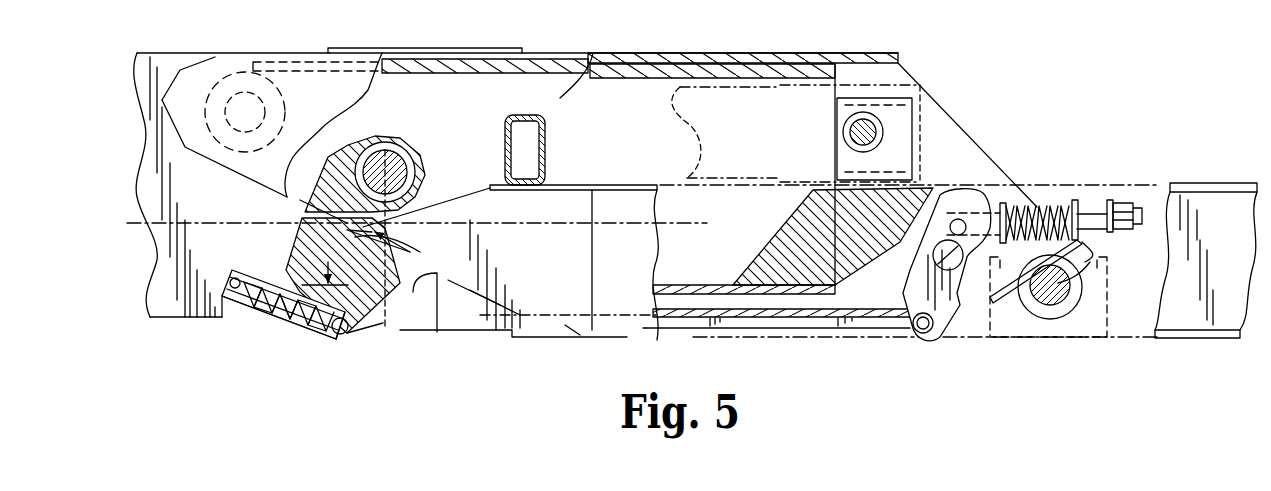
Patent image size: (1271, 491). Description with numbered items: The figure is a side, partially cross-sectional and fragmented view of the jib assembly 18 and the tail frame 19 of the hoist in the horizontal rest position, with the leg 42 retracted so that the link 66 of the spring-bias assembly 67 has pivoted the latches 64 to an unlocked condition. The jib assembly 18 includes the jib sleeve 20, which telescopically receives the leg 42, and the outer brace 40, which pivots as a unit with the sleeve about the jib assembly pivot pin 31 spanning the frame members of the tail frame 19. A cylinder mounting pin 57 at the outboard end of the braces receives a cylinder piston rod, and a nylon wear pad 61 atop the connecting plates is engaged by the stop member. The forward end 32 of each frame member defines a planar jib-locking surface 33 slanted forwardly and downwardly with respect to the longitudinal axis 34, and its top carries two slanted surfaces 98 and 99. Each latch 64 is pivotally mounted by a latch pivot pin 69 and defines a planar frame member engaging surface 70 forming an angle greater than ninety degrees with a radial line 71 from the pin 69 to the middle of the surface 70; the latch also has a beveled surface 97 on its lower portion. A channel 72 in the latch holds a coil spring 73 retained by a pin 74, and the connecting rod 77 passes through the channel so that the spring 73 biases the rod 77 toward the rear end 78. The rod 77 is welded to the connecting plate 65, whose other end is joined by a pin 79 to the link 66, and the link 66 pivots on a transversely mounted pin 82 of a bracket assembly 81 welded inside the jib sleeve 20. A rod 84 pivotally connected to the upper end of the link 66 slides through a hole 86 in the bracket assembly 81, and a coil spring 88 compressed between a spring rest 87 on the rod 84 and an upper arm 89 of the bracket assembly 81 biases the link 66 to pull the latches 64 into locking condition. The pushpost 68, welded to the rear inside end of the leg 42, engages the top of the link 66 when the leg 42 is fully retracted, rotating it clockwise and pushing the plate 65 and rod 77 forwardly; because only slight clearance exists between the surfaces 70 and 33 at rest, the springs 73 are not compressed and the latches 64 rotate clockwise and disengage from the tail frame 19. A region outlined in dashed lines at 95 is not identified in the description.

The jib assembly 18 is at (553, 48).
The tail frame 19 is at (630, 342).
The jib sleeve 20 is at (180, 53).
The jib assembly pivot pin 31 is at (1055, 320).
The forward end 32 is at (476, 325).
The jib-locking surface 33 is at (415, 290).
The longitudinal axis 34 is at (688, 232).
The outer brace 40 is at (300, 85).
The leg 42 is at (715, 62).
The cylinder mounting pin 57 is at (232, 85).
The nylon wear pad 61 is at (360, 48).
The spring-loaded latch 64 is at (313, 205).
The connecting plate 65 is at (797, 320).
The link 66 is at (975, 195).
The spring-bias assembly 67 is at (1076, 200).
The pushpost 68 is at (880, 238).
The latch pivot pin 69 is at (395, 165).
The frame member engaging surface 70 is at (395, 255).
The radial line 71 is at (395, 215).
The channel 72 is at (224, 318).
The coil spring 73 is at (275, 320).
The pin 74 is at (231, 286).
The connecting rod 77 is at (325, 336).
The rear end 78 is at (348, 338).
The pin 79 is at (915, 332).
The bracket assembly 81 is at (1092, 268).
The transversely mounted pin 82 is at (955, 270).
The rod 84 is at (1155, 200).
The hole 86 is at (1086, 243).
The spring rest 87 is at (1000, 215).
The coil spring 88 is at (1045, 207).
The upper arm 89 is at (1085, 203).
The mounting region 95 is at (1110, 338).
The beveled surface 97 is at (388, 330).
The slanted surface 98 is at (415, 233).
The slanted surface 99 is at (462, 200).